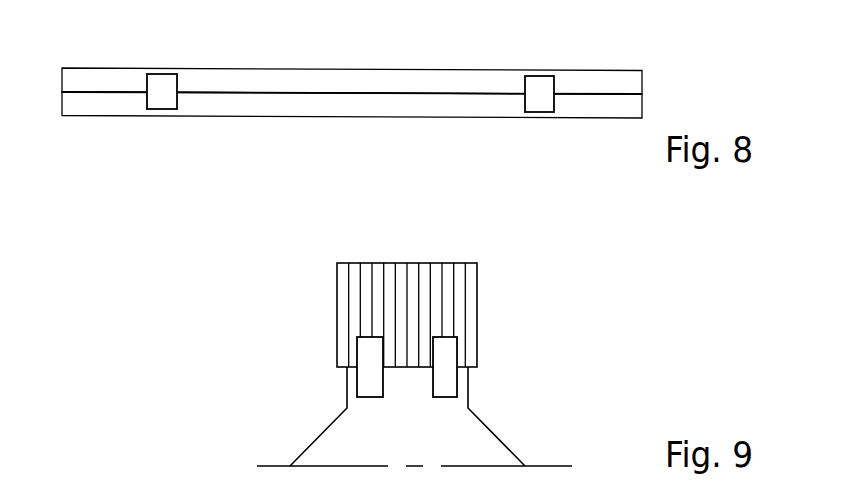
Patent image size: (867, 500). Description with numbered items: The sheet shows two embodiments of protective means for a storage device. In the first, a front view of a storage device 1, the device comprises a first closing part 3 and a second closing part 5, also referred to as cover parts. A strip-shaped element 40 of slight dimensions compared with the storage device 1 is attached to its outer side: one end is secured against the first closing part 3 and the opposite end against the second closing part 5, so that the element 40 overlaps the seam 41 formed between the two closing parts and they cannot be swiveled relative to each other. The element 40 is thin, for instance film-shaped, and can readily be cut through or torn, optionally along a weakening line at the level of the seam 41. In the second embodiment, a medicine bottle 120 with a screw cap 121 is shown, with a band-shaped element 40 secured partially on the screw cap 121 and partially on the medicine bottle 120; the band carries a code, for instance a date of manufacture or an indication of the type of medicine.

In FIG. 8, the storage device 1 is at (387, 94).
In FIG. 8, the first closing part 3 is at (365, 80).
In FIG. 8, the second closing part 5 is at (365, 107).
In FIG. 8, the strip-shaped element 40 is at (164, 91).
In FIG. 9, the strip-shaped element 40 is at (360, 390).
In FIG. 8, the seam 41 is at (616, 92).
In FIG. 9, the medicine bottle 120 is at (436, 364).
In FIG. 9, the screw cap 121 is at (462, 292).